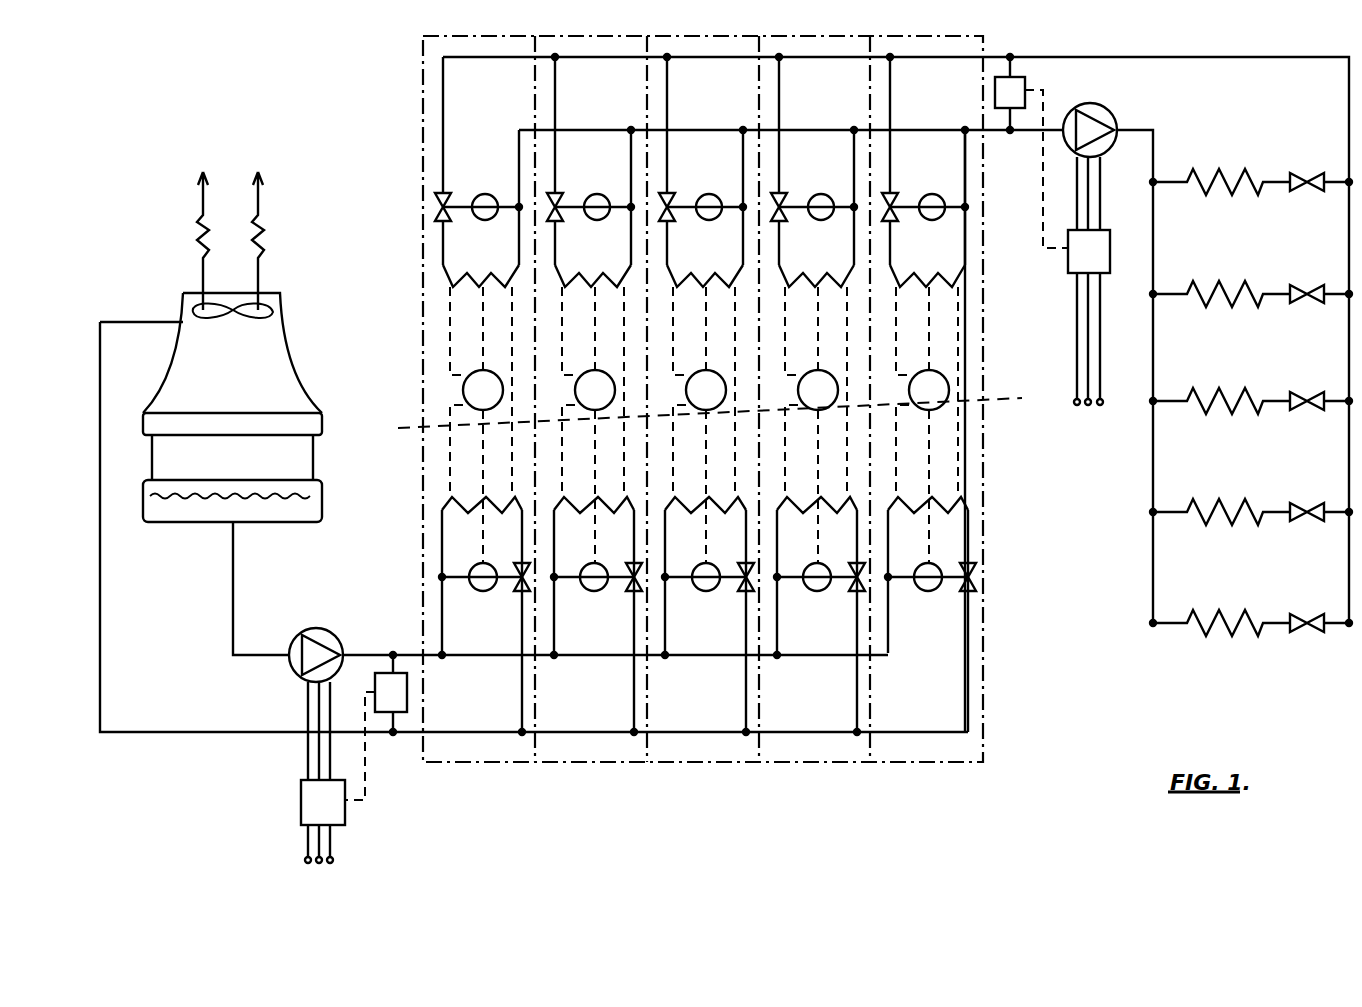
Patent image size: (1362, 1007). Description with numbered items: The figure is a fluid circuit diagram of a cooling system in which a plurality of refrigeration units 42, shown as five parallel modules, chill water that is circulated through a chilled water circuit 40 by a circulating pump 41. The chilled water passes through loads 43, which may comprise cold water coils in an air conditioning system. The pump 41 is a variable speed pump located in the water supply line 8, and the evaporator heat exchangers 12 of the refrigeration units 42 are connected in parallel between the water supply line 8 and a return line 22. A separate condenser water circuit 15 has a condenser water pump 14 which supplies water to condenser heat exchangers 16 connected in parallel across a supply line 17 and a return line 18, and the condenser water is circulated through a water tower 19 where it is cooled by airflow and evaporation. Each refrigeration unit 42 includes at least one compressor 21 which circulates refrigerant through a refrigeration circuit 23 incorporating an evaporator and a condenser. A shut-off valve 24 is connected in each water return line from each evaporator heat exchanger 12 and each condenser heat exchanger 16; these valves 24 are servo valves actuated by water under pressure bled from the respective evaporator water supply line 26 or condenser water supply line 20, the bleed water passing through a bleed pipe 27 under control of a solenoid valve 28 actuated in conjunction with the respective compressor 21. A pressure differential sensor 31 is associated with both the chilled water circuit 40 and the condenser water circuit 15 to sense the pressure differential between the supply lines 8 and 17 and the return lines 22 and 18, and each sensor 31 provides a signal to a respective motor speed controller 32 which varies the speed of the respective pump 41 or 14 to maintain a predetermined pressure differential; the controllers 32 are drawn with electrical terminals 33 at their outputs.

The water supply line 8 is at (975, 128).
The evaporator heat exchanger 12 is at (497, 287).
The condenser water pump 14 is at (308, 630).
The condenser water circuit 15 is at (188, 748).
The condenser heat exchanger 16 is at (500, 497).
The supply line 17 is at (408, 652).
The return line 18 is at (257, 732).
The water tower 19 is at (178, 277).
The condenser water supply line 20 is at (555, 620).
The compressor 21 is at (704, 378).
The return line 22 is at (1080, 57).
The refrigeration circuit 23 is at (709, 413).
The shut-off valve 24 is at (555, 220).
The evaporator water supply line 26 is at (631, 155).
The bleed pipe 27 is at (516, 200).
The solenoid valve 28 is at (443, 190).
The pressure differential sensor 31 is at (404, 712).
The motor speed controller 32 is at (315, 800).
The electrical terminals 33 is at (305, 860).
The chilled water circuit 40 is at (1349, 105).
The circulating pump 41 is at (1105, 115).
The refrigeration unit 42 is at (586, 757).
The load 43 is at (1217, 310).